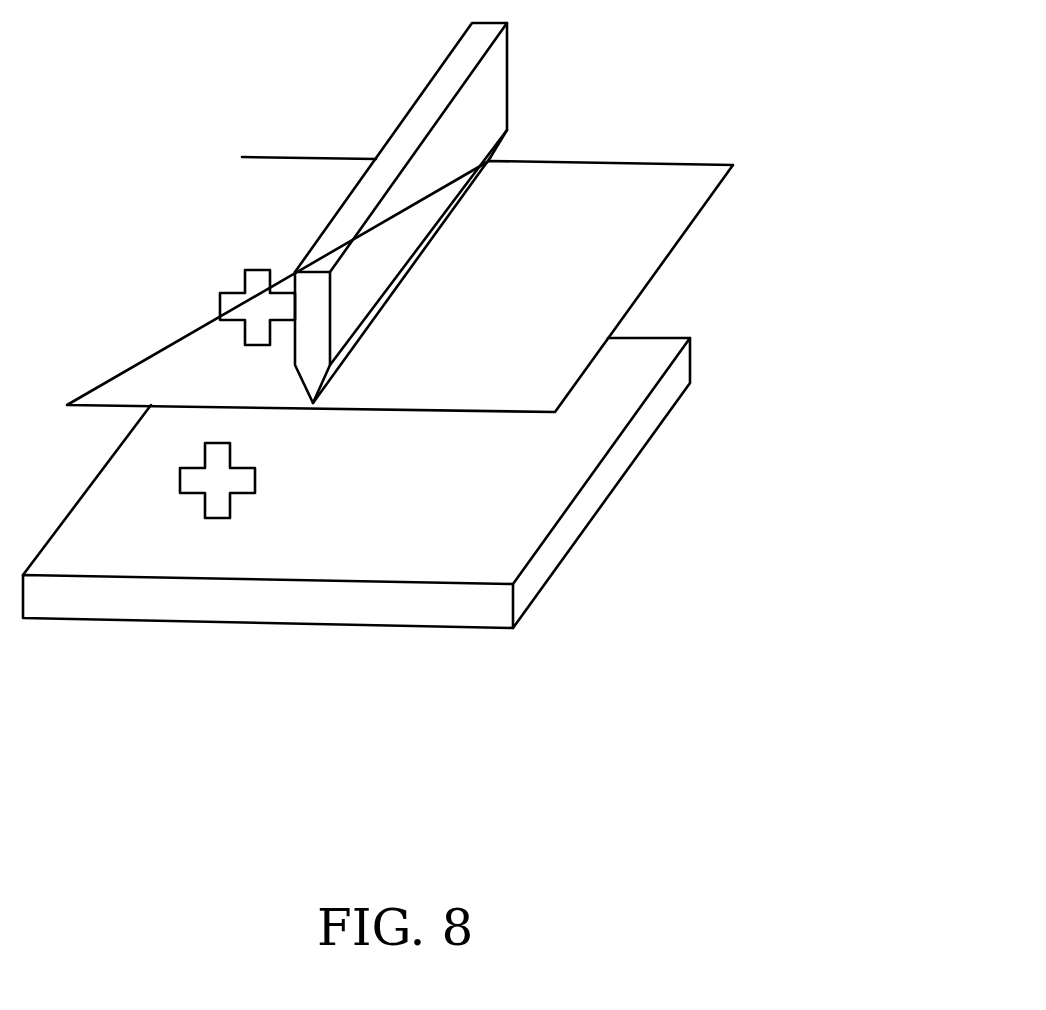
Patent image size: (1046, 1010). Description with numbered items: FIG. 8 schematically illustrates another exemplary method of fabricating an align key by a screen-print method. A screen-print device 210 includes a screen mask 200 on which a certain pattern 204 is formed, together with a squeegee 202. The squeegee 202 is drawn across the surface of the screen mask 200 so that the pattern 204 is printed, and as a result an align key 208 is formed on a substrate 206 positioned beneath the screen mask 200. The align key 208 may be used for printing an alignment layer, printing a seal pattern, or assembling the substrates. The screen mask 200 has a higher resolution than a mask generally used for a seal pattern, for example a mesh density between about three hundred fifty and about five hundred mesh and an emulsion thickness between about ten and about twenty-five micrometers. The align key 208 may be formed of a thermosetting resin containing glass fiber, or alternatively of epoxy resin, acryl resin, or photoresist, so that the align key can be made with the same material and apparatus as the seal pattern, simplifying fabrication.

The screen mask 200 is at (678, 205).
The squeegee 202 is at (495, 78).
The pattern 204 is at (253, 277).
The substrate 206 is at (640, 440).
The align key 208 is at (180, 473).
The screen-print device 210 is at (787, 128).